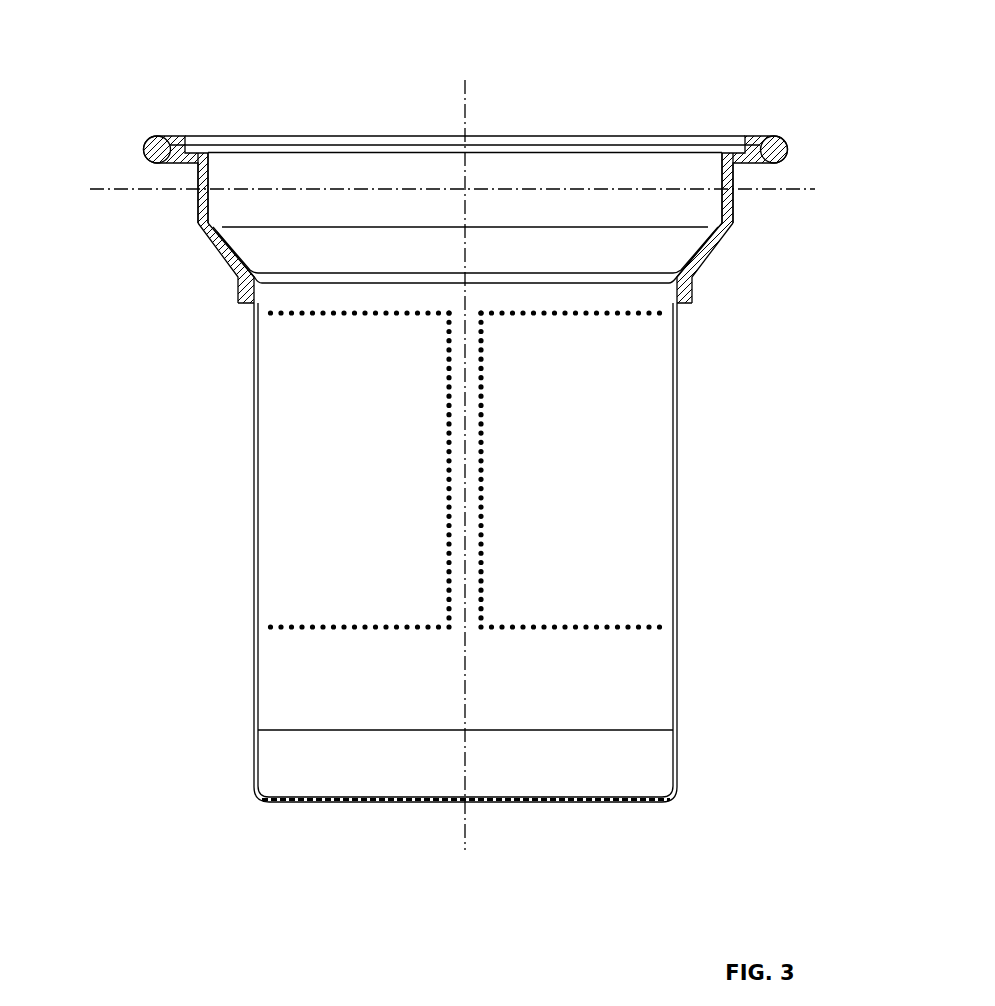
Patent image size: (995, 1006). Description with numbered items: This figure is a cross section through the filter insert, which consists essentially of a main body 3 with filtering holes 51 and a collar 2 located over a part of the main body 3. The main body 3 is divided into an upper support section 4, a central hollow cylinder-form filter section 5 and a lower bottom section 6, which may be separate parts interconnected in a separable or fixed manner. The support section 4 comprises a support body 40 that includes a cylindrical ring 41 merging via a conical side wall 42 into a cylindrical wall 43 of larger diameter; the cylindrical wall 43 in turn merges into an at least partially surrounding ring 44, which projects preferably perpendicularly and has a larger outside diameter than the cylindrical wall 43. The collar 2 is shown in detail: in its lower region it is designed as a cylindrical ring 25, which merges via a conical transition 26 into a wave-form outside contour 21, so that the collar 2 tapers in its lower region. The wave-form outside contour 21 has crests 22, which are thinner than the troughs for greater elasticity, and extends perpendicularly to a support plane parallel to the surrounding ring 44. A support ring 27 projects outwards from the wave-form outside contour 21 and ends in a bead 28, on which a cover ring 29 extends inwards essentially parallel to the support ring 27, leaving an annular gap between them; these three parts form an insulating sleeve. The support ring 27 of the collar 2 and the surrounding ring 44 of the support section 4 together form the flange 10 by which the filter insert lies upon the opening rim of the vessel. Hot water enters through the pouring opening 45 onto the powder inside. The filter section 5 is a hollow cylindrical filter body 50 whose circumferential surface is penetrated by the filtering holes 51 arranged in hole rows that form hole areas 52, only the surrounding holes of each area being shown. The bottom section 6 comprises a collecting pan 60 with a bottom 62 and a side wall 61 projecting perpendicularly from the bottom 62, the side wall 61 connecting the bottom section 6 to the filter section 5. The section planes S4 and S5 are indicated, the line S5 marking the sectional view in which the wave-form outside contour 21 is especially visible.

The collar 2 is at (497, 184).
The main body 3 is at (492, 552).
The support section 4 is at (497, 184).
The filter section 5 is at (493, 552).
The bottom section 6 is at (412, 806).
The flange 10 is at (419, 101).
The wave-form outside contour 21 is at (473, 248).
The crests 22 is at (191, 206).
The cylindrical ring 25 is at (498, 320).
The conical transition 26 is at (498, 320).
The support ring 27 is at (497, 185).
The bead 28 is at (146, 145).
The cover ring 29 is at (497, 184).
The support body 40 is at (677, 303).
The cylindrical ring 41 is at (497, 185).
The conical side wall 42 is at (497, 185).
The cylindrical wall 43 is at (497, 185).
The at least partially surrounding ring 44 is at (727, 152).
The pouring opening 45 is at (497, 185).
The filter body 50 is at (254, 597).
The filtering holes 51 is at (366, 631).
The hole areas 52 is at (411, 552).
The collecting pan 60 is at (408, 806).
The side wall 61 is at (258, 765).
The bottom 62 is at (408, 806).
The section plane S4 is at (462, 467).
The section line S5- S5 is at (453, 190).